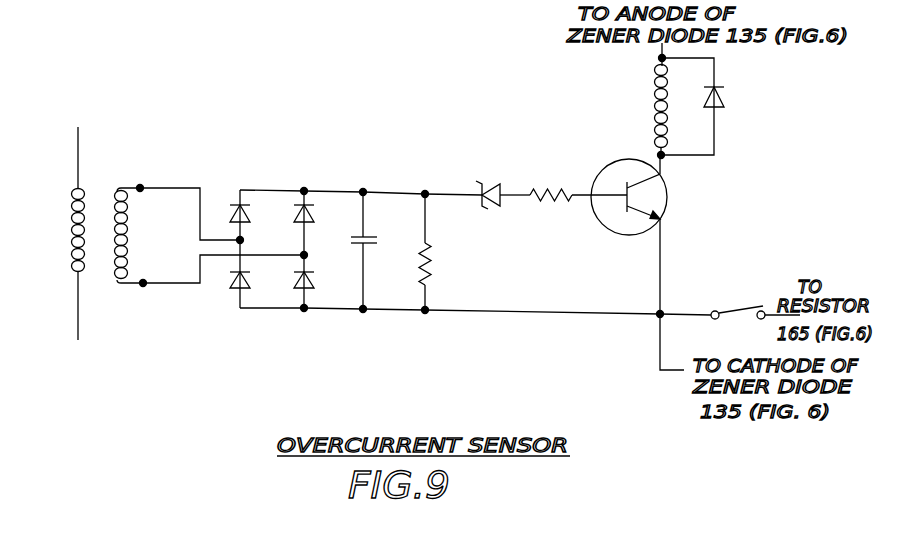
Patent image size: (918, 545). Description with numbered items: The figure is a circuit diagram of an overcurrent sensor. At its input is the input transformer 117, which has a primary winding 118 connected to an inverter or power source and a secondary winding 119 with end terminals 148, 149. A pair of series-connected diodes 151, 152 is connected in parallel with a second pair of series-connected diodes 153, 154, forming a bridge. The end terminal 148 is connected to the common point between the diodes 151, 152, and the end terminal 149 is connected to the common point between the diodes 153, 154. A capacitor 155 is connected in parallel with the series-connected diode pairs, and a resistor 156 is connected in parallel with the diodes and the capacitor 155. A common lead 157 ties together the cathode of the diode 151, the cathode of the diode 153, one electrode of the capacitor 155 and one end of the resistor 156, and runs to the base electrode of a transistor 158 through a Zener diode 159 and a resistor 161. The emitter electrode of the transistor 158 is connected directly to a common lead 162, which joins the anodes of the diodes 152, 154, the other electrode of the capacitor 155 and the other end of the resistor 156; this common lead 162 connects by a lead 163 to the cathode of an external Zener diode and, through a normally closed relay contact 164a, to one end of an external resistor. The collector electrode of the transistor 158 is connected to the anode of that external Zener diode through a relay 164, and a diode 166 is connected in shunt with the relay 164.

The input transformer 117 is at (161, 233).
The primary winding 118 is at (78, 233).
The secondary winding 119 is at (128, 240).
The end terminal 148 is at (140, 188).
The end terminal 149 is at (143, 283).
The diode 151 is at (233, 217).
The diode 152 is at (237, 287).
The diode 153 is at (312, 217).
The diode 154 is at (298, 290).
The capacitor 155 is at (374, 243).
The resistor 156 is at (430, 260).
The common lead 157 is at (341, 241).
The transistor 158 is at (662, 202).
The Zener diode 159 is at (492, 187).
The resistor 161 is at (570, 163).
The common lead 162 is at (569, 293).
The lead 163 is at (673, 373).
The relay 164 is at (655, 100).
The relay contact 164a is at (740, 307).
The diode 166 is at (723, 102).